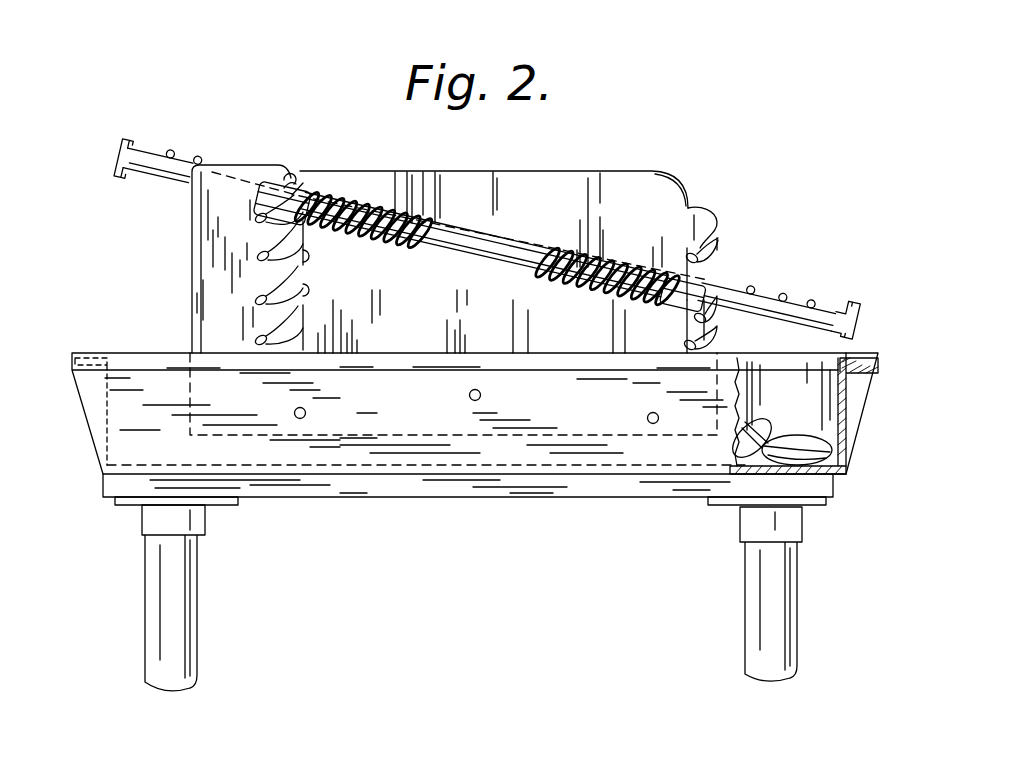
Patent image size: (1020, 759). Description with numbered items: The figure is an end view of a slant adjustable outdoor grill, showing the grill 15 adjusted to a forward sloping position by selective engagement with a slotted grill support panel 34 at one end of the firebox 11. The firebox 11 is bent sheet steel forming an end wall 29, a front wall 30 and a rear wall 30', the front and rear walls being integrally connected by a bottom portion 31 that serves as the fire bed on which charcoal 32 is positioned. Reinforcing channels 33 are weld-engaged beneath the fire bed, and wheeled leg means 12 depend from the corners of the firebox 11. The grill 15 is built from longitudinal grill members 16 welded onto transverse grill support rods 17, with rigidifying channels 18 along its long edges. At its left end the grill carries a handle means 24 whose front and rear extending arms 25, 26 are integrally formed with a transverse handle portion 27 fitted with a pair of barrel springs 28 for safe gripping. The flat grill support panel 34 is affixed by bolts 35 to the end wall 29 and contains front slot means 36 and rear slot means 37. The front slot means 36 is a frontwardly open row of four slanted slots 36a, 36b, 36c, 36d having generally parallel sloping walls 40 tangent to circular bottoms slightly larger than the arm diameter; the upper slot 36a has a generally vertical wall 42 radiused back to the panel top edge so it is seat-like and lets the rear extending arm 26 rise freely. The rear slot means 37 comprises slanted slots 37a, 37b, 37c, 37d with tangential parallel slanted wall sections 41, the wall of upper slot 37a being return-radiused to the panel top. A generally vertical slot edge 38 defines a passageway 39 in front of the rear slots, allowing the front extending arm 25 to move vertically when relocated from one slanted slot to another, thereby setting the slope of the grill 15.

The firebox 11 is at (72, 380).
The wheeled leg means 12 is at (780, 612).
The grill 15 is at (190, 150).
The longitudinal grill members 16 is at (811, 295).
The transverse grill support rods 17 is at (772, 290).
The rigidifying channels 18 is at (118, 164).
The handle means 24 is at (456, 261).
The front extending arm 25 is at (258, 198).
The rear extending arm 26 is at (688, 306).
The transverse handle portion 27 is at (485, 240).
The barrel springs 28 is at (402, 247).
The end wall 29 is at (135, 432).
The front wall 30 is at (877, 413).
The rear wall 30' is at (67, 411).
The bottom portion 31 is at (795, 472).
The charcoal 32 is at (792, 440).
The reinforcing channels 33 is at (473, 492).
The grill support panel 34 is at (560, 170).
The bolts 35 is at (647, 416).
The front slot means 36 is at (744, 206).
The upper front slot 36a is at (690, 216).
The front slanted slot 36b is at (688, 255).
The front slanted slot 36c is at (718, 325).
The front slanted slot 36d is at (716, 346).
The rear slot means 37 is at (236, 265).
The upper rear slot 37a is at (258, 222).
The rear slanted slot 37b is at (258, 255).
The rear slanted slot 37c is at (257, 299).
The rear slanted slot 37d is at (257, 338).
The vertical slot edge 38 is at (305, 305).
The passageway 39 is at (297, 163).
The sloping walls 40 is at (720, 242).
The slanted wall sections 41 is at (300, 178).
The vertical wall 42 is at (690, 192).